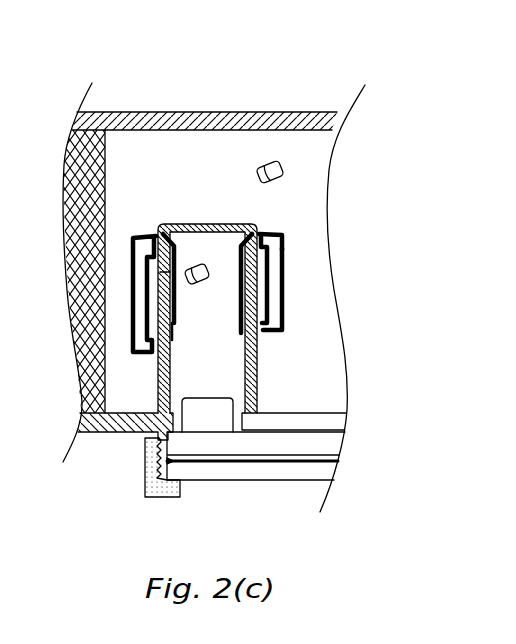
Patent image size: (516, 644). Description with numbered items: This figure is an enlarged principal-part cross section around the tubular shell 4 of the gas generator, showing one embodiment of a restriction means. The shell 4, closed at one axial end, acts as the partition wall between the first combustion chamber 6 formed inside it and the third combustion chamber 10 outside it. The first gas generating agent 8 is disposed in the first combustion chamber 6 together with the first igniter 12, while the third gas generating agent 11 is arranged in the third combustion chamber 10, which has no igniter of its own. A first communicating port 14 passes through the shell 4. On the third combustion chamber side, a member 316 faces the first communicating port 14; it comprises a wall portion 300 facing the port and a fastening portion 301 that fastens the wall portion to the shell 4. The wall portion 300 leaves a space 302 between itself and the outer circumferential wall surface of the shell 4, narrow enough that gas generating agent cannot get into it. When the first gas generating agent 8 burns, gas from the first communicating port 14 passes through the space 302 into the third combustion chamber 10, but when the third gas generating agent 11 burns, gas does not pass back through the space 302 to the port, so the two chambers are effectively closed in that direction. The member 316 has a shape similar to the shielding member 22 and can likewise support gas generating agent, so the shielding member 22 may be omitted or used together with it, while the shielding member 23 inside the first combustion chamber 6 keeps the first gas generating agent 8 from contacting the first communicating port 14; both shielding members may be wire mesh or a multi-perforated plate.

The tubular shell 4 is at (262, 383).
The first combustion chamber 6 is at (220, 387).
The first gas generating agent 8 is at (193, 264).
The third combustion chamber 10 is at (222, 163).
The third gas generating agent 11 is at (267, 161).
The first igniter 12 is at (208, 422).
The first communicating port 14 is at (176, 262).
The shielding member 22 is at (140, 237).
The shielding member 23 is at (236, 260).
The wall portion 300 is at (281, 332).
The fastening portion 301 is at (273, 237).
The space 302 is at (153, 353).
The member 316 is at (268, 276).